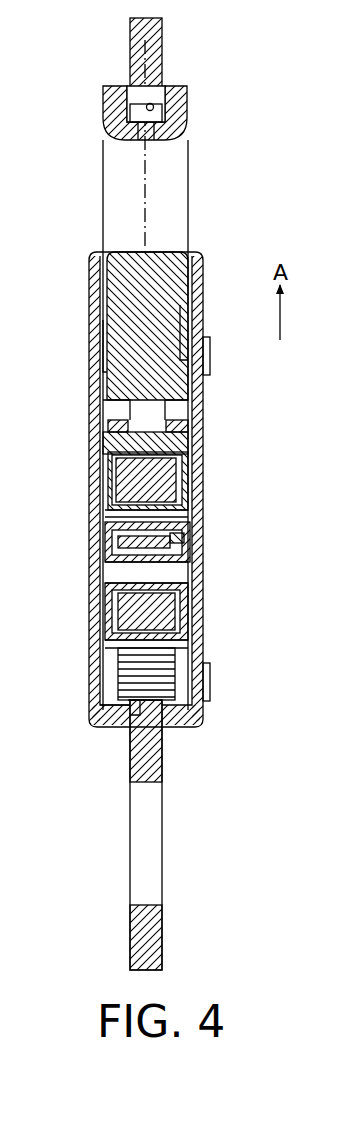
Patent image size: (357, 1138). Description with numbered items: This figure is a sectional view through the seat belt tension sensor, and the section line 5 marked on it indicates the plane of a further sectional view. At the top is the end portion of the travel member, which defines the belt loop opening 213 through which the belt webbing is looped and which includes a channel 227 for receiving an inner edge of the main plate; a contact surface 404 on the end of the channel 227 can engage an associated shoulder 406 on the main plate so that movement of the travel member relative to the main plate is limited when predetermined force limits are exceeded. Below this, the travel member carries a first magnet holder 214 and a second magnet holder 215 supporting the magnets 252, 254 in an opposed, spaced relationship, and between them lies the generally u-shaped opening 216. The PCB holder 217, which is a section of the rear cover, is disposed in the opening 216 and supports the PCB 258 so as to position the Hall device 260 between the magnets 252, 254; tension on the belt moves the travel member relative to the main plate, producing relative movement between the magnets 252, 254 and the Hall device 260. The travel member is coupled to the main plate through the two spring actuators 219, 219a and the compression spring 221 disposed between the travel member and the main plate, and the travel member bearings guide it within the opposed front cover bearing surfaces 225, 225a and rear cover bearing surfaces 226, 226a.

The channel 227 is at (125, 88).
The shoulder 406 is at (152, 104).
The belt loop opening 213 is at (120, 196).
The contact surface 404 is at (165, 128).
The section line 5 is at (146, 295).
The front cover bearing surface 225 is at (172, 330).
The front cover bearing surface 225a is at (110, 352).
The spring actuator 219a is at (104, 418).
The spring actuator 219 is at (185, 420).
The first magnet holder 214 is at (110, 443).
The magnet 252 is at (165, 472).
The PCB holder 217 is at (104, 532).
The Hall device 260 is at (150, 540).
The printed circuit board 258 is at (180, 545).
The opening 216 is at (118, 572).
The magnet 254 is at (150, 612).
The second magnet holder 215 is at (112, 642).
The rear cover bearing surface 226 is at (185, 672).
The rear cover bearing surface 226a is at (108, 620).
The compression spring 221 is at (155, 697).